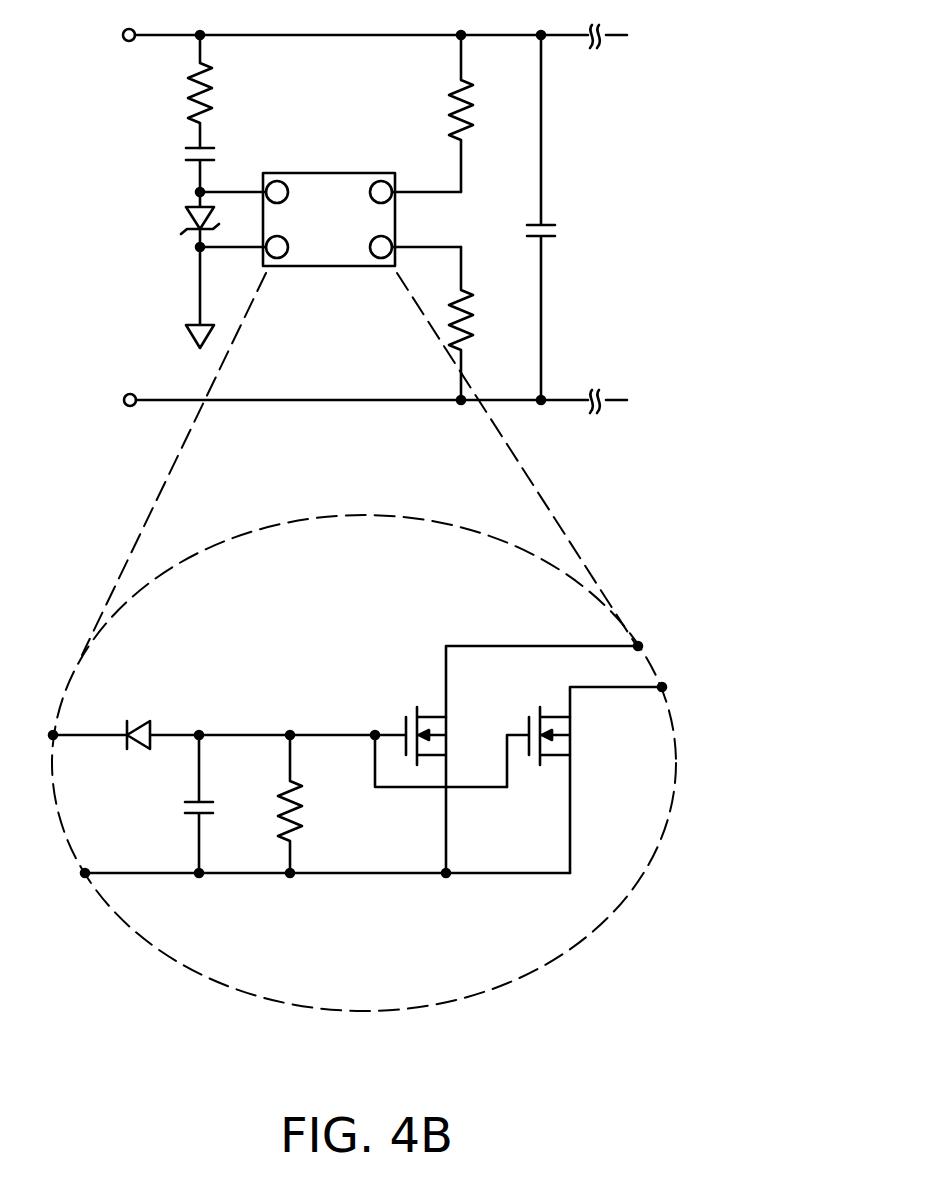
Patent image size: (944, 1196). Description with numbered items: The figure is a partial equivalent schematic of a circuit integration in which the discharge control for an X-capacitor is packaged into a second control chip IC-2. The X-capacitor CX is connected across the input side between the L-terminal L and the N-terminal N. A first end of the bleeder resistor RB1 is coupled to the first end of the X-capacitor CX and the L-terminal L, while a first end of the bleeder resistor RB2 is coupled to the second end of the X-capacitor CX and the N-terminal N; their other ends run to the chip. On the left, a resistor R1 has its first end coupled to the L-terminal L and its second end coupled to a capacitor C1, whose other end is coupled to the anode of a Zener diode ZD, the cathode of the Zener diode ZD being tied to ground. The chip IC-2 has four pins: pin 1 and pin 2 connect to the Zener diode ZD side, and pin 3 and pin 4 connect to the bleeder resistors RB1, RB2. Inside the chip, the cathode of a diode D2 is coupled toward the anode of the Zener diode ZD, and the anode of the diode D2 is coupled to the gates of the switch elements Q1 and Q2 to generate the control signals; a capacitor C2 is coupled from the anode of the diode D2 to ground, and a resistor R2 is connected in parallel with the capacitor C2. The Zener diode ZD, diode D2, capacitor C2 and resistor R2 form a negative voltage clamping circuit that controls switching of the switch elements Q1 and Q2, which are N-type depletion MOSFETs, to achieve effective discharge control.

The L-terminal L is at (363, 35).
The N-terminal N is at (363, 400).
The resistor R1 is at (184, 89).
The capacitor C1 is at (184, 168).
The Zener diode ZD is at (181, 268).
The second control chip IC-2 is at (362, 236).
The bleeder resistor RB1 is at (490, 111).
The bleeder resistor RB2 is at (490, 325).
The X-capacitor CX is at (563, 217).
The IC-2 pin 1 is at (73, 735).
The IC-2 pin 2 is at (311, 873).
The IC-2 pin 3 is at (560, 675).
The IC-2 pin 4 is at (634, 696).
The diode D2 is at (249, 715).
The capacitor C2 is at (221, 804).
The resistor R2 is at (310, 804).
The switch element Q1 is at (439, 792).
The switch element Q2 is at (564, 790).